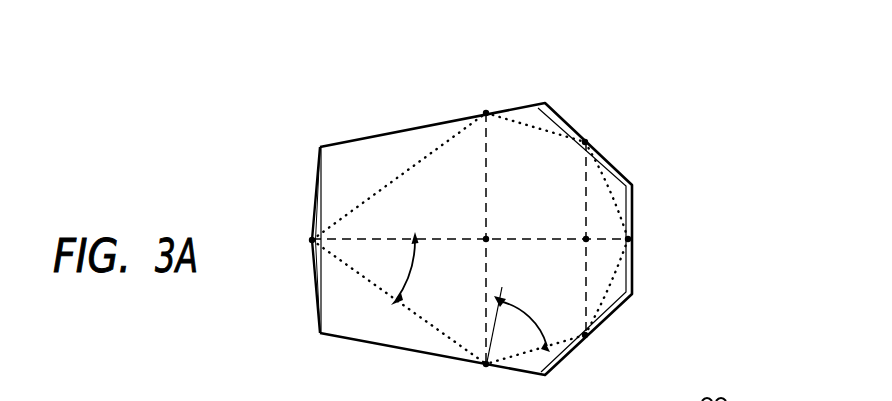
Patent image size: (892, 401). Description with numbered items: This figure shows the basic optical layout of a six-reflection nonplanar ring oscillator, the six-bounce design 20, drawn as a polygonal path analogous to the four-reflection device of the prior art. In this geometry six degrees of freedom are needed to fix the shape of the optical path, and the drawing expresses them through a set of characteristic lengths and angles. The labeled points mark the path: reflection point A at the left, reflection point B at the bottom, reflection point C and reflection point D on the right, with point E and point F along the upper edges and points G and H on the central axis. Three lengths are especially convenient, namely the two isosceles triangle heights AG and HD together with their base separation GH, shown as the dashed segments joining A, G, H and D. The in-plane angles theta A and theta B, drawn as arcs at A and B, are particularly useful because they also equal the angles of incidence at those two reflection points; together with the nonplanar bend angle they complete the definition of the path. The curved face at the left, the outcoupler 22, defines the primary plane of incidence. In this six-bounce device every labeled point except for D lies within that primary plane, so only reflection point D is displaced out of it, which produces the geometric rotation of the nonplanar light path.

The 6-bounce design 20 is at (630, 98).
The outcoupler 22 is at (313, 282).
The reflection point A is at (301, 244).
The reflection point B is at (482, 381).
The reflection point C is at (585, 335).
The reflection point D is at (641, 242).
The point E is at (595, 130).
The point F is at (482, 98).
The point G is at (477, 225).
The point H is at (577, 225).